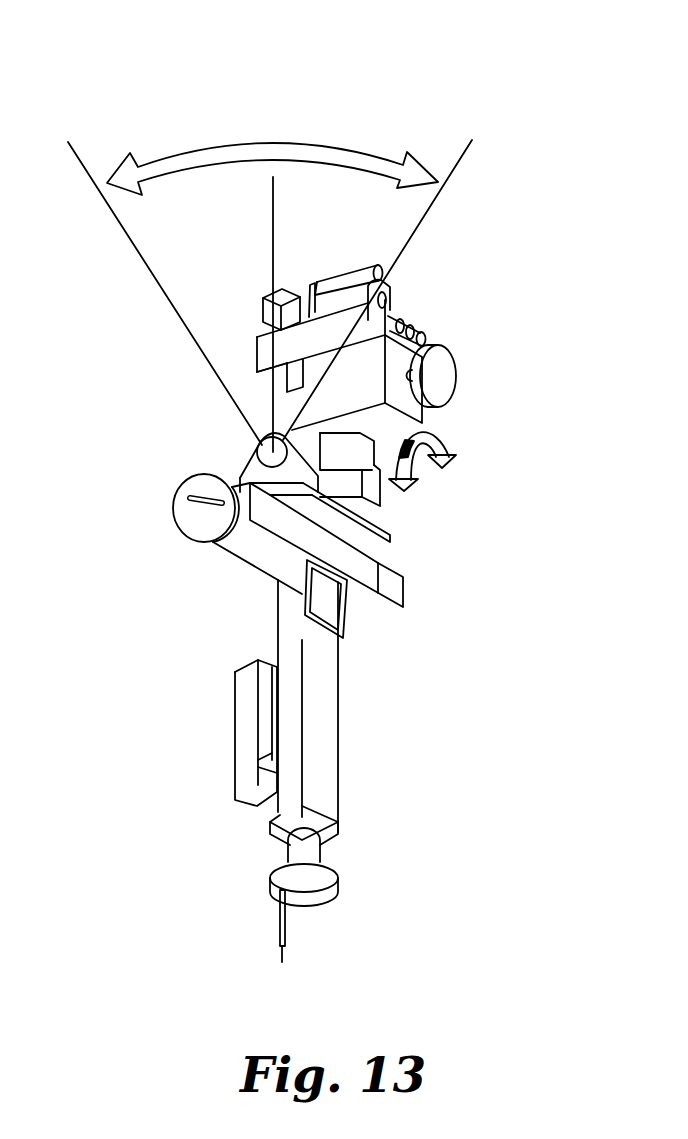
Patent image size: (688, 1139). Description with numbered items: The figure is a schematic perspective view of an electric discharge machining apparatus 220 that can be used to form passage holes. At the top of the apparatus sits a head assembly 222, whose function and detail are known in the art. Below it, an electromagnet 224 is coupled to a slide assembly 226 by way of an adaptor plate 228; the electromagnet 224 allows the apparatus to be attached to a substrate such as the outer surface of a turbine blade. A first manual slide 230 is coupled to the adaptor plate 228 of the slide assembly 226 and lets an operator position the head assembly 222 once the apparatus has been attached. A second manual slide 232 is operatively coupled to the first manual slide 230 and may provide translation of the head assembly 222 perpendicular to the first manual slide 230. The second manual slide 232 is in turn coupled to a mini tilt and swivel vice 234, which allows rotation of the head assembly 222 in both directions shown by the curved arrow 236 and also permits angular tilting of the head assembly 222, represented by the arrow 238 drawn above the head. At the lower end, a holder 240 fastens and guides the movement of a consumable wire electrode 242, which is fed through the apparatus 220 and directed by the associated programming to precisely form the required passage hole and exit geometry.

The apparatus 220 is at (552, 127).
The head assembly 222 is at (422, 322).
The electromagnet 224 is at (258, 795).
The slide assembly 226 is at (467, 460).
The adaptor plate 228 is at (262, 694).
The first manual slide 230 is at (325, 773).
The second manual slide 232 is at (377, 608).
The mini tilt and swivel vice 234 is at (362, 541).
The curved arrow 236 is at (438, 442).
The arrow 238 is at (335, 147).
The holder 240 is at (286, 927).
The wire electrode 242 is at (280, 957).